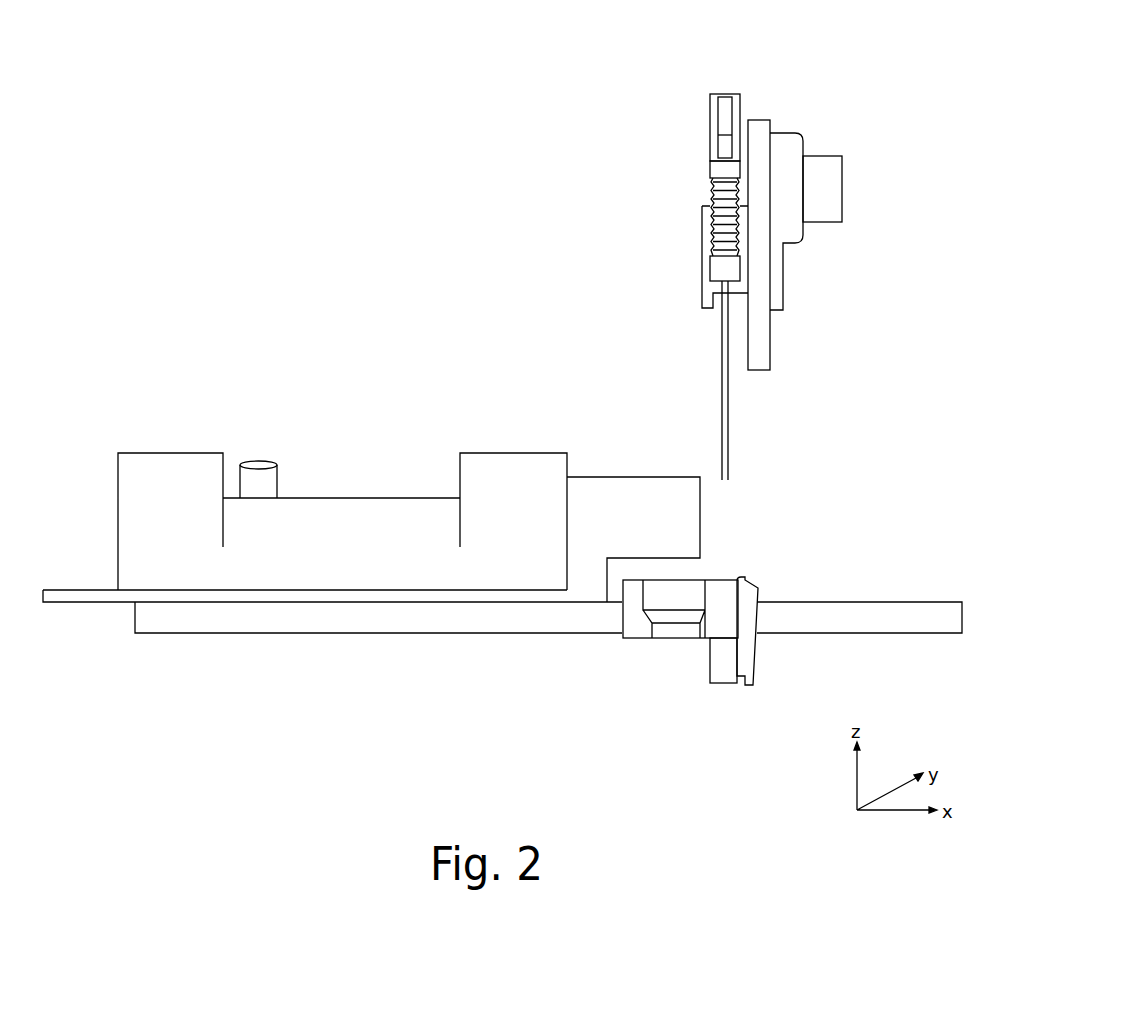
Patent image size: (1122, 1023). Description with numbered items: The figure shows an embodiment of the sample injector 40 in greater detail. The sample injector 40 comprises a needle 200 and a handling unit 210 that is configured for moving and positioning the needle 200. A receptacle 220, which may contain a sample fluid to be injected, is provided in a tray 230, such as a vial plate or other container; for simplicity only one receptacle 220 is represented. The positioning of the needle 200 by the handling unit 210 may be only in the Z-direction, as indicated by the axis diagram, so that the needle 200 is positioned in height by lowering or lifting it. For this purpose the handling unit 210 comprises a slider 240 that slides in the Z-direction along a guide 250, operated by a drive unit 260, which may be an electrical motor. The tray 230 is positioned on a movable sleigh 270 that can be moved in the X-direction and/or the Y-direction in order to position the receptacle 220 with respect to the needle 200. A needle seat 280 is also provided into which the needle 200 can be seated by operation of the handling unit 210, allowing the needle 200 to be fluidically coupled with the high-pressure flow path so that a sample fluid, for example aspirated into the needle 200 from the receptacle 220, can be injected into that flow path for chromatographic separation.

The sample injector 40 is at (565, 92).
The needle 200 is at (729, 397).
The handling unit 210 is at (797, 130).
The receptacle 220 is at (256, 465).
The tray 230 is at (515, 466).
The slider 240 is at (700, 237).
The guide 250 is at (760, 122).
The drive unit 260 is at (823, 172).
The movable sleigh 270 is at (625, 493).
The needle seat 280 is at (717, 597).